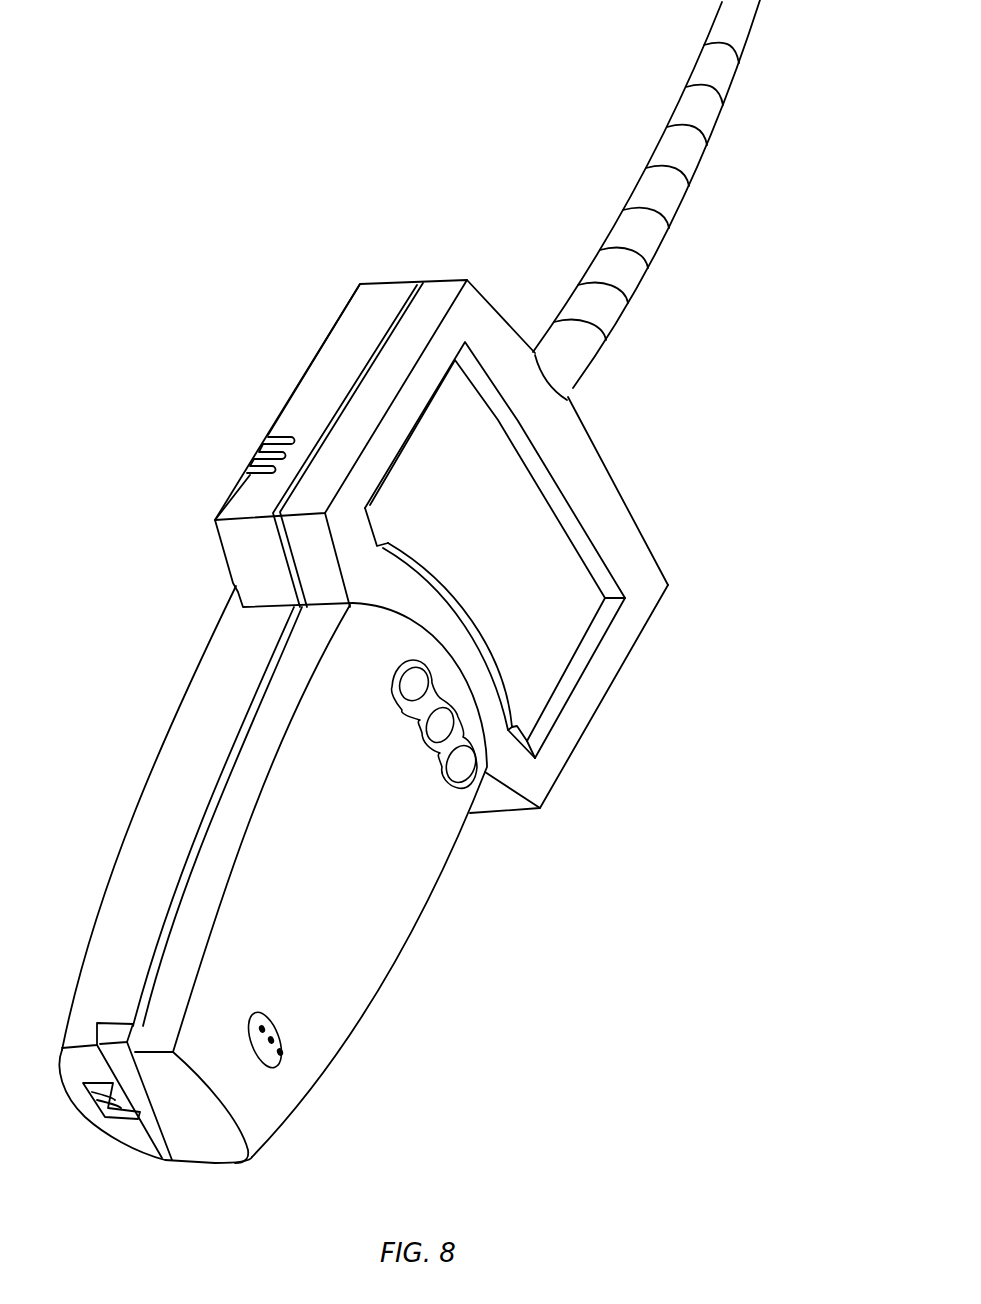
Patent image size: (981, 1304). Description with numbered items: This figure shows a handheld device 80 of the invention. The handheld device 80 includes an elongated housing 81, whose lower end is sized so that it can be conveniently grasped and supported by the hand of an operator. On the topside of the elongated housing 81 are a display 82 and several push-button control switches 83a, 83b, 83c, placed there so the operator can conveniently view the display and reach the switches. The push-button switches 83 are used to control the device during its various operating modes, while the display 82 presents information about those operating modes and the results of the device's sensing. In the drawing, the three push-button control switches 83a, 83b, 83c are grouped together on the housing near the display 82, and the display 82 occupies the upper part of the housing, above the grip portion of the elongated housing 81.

The handheld device 80 is at (595, 925).
The elongated housing 81 is at (355, 995).
The display 82 is at (575, 618).
The push-button switches 83 is at (288, 1053).
The push-button control switch 83a is at (408, 695).
The push-button control switch 83b is at (437, 730).
The push-button control switch 83c is at (453, 777).